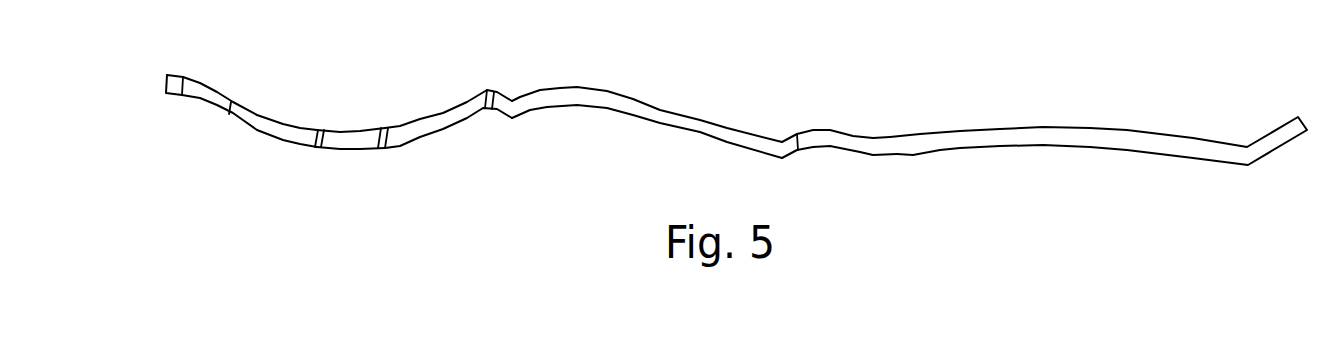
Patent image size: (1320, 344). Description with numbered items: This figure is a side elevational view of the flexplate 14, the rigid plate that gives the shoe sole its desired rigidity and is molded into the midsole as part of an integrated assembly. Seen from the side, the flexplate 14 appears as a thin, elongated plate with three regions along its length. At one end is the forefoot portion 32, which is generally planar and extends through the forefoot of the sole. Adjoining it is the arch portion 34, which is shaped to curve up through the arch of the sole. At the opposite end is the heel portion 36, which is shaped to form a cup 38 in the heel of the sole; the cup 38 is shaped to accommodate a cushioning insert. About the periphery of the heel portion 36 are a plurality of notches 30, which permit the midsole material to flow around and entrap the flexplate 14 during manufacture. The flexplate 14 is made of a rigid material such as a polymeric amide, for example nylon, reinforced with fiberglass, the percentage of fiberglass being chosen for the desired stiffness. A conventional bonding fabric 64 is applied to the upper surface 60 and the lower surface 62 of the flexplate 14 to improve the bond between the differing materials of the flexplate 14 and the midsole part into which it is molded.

The flexplate 14 is at (1142, 99).
The notches 30 is at (199, 93).
The forefoot portion 32 is at (1045, 127).
The arch portion 34 is at (608, 92).
The heel portion 36 is at (285, 140).
The cup 38 is at (343, 131).
The upper surface 60 is at (825, 130).
The lower surface 62 is at (913, 155).
The bonding fabric 64 is at (660, 123).